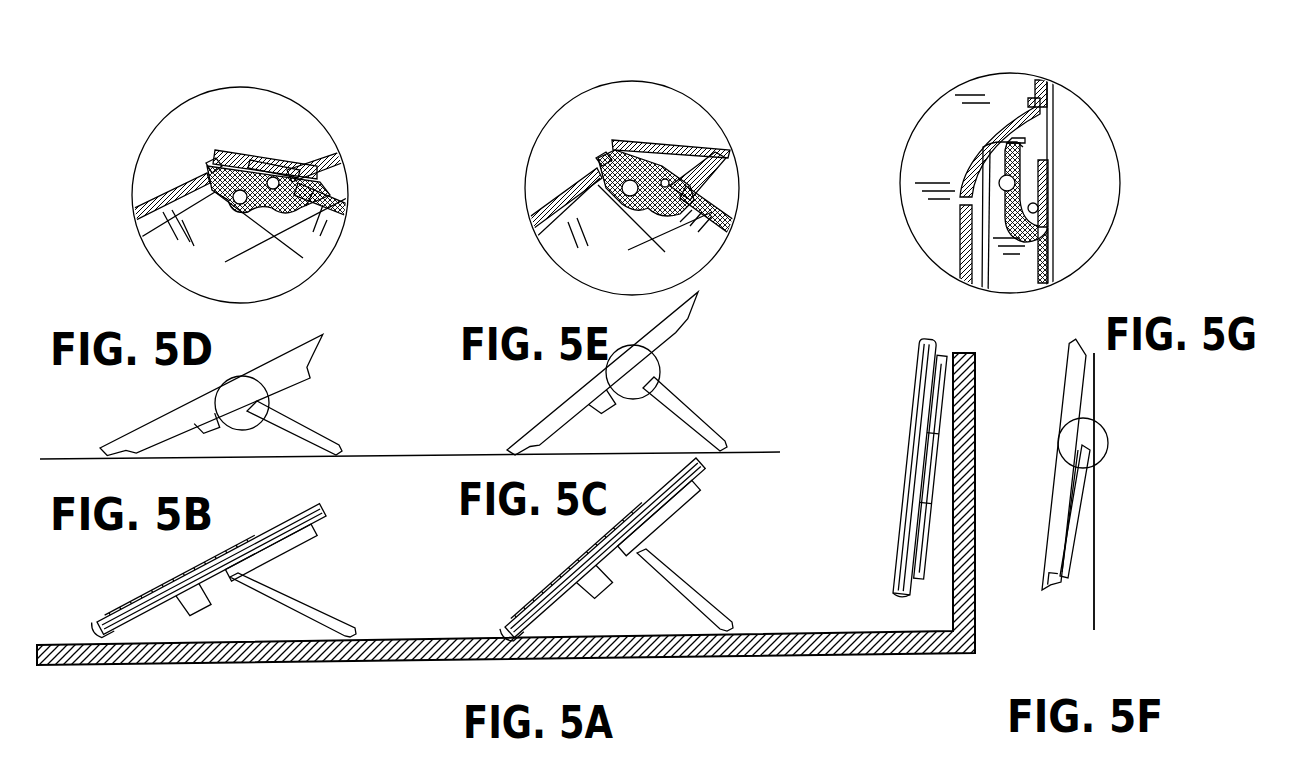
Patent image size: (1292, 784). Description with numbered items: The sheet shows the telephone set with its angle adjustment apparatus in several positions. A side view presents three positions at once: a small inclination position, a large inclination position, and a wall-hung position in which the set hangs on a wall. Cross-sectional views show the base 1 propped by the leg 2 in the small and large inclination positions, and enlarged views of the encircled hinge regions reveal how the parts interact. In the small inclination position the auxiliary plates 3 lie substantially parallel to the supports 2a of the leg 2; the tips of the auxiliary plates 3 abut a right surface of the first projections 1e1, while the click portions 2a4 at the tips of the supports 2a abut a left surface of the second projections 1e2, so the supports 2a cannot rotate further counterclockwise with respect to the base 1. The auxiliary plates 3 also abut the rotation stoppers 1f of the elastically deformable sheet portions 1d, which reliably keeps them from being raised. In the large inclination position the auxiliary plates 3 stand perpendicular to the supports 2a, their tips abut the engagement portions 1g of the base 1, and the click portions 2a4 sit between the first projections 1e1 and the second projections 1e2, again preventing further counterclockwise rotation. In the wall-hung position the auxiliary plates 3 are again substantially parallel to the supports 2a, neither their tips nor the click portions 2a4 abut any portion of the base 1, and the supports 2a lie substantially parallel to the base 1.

In FIG. 5A, the base 1 is at (946, 352).
In FIG. 5B, the base 1 is at (300, 565).
In FIG. 5C, the base 1 is at (676, 536).
In FIG. 5D, the base 1 is at (316, 368).
In FIG. 5E, the base 1 is at (690, 346).
In FIG. 5F, the base 1 is at (1064, 516).
In FIG. 5A, the leg 2 is at (936, 590).
In FIG. 5B, the leg 2 is at (340, 612).
In FIG. 5C, the leg 2 is at (720, 604).
In FIG. 5D, the leg 2 is at (338, 420).
In FIG. 5E, the leg 2 is at (706, 412).
In FIG. 5D, the support 2a is at (346, 192).
In FIG. 5E, the support 2a is at (724, 194).
In FIG. 5F, the support 2a is at (1096, 518).
In FIG. 5G, the support 2a is at (1032, 250).
In FIG. 5D, the click portion 2a4 is at (205, 188).
In FIG. 5E, the click portion 2a4 is at (582, 180).
In FIG. 5G, the click portion 2a4 is at (1014, 140).
In FIG. 5D, the auxiliary plate 3 is at (280, 164).
In FIG. 5E, the auxiliary plate 3 is at (712, 176).
In FIG. 5G, the auxiliary plate 3 is at (1048, 172).
In FIG. 5G, the sheet portion 1d is at (978, 140).
In FIG. 5D, the first projection 1e1 is at (233, 150).
In FIG. 5E, the first projection 1e1 is at (615, 152).
In FIG. 5D, the second projection 1e2 is at (213, 165).
In FIG. 5E, the second projection 1e2 is at (600, 158).
In FIG. 5D, the rotation stopper 1f is at (262, 156).
In FIG. 5E, the engagement portion 1g is at (718, 142).